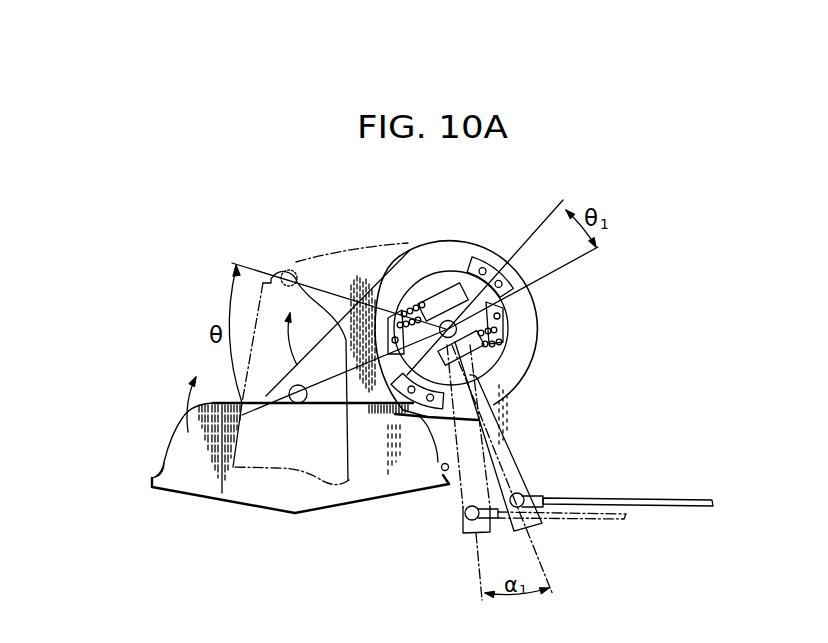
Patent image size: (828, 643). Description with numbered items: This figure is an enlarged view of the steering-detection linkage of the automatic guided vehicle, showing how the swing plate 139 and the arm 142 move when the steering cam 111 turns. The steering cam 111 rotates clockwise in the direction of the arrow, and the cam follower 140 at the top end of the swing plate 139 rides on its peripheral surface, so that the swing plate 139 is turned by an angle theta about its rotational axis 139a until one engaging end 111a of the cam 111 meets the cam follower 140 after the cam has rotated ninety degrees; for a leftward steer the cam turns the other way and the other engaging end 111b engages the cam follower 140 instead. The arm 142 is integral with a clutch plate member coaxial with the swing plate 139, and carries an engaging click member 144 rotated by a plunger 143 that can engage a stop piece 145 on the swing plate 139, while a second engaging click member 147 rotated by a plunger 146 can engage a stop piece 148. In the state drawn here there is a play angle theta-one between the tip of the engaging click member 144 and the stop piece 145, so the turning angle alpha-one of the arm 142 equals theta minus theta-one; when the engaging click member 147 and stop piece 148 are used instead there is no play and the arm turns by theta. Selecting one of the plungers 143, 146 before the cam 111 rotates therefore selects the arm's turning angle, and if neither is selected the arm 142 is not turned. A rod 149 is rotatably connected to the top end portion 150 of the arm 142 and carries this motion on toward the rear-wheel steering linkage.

The steering cam 111 is at (212, 493).
The engaging end of the cam 111a is at (157, 469).
The other engaging end of the cam 111b is at (437, 487).
The swing plate 139 is at (412, 258).
The rotational axis 139a is at (442, 288).
The cam follower 140 is at (288, 268).
The arm 142 is at (509, 457).
The plunger 143 is at (463, 272).
The engaging click member 144 is at (373, 279).
The stop piece 145 is at (321, 367).
The plunger 146 is at (505, 362).
The engaging click member 147 is at (504, 326).
The stop piece 148 is at (524, 293).
The rod 149 is at (657, 498).
The top end portion of the arm 150 is at (526, 493).